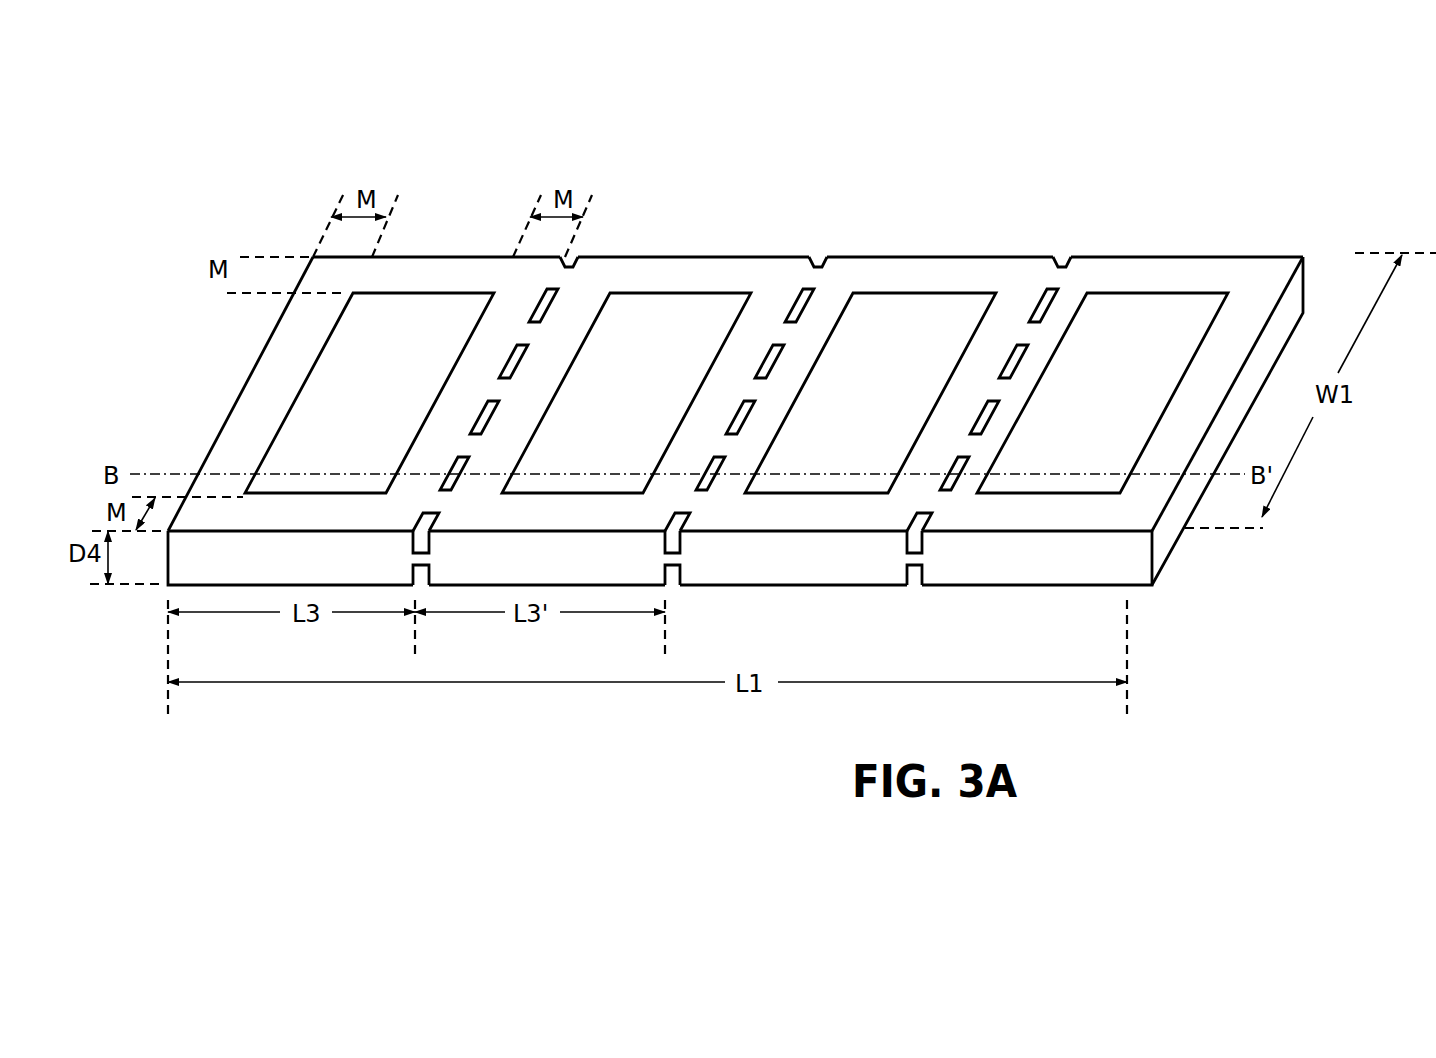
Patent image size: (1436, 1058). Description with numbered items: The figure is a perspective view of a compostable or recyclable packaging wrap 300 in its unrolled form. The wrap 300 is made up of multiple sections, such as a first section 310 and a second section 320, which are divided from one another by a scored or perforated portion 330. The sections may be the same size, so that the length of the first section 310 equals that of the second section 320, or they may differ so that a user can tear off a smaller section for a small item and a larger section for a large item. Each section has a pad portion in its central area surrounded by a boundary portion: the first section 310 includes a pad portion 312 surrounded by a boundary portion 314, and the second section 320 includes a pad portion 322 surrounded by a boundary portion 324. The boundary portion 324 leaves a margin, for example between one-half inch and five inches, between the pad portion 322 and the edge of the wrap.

The compostable or recyclable packaging wrap 300 is at (274, 196).
The first section 310 is at (257, 358).
The pad portion 312 is at (438, 313).
The boundary portion 314 is at (237, 447).
The second section 320 is at (797, 253).
The pad portion 322 is at (639, 327).
The boundary portion 324 is at (702, 267).
The scored or perforated portion 330 is at (558, 296).